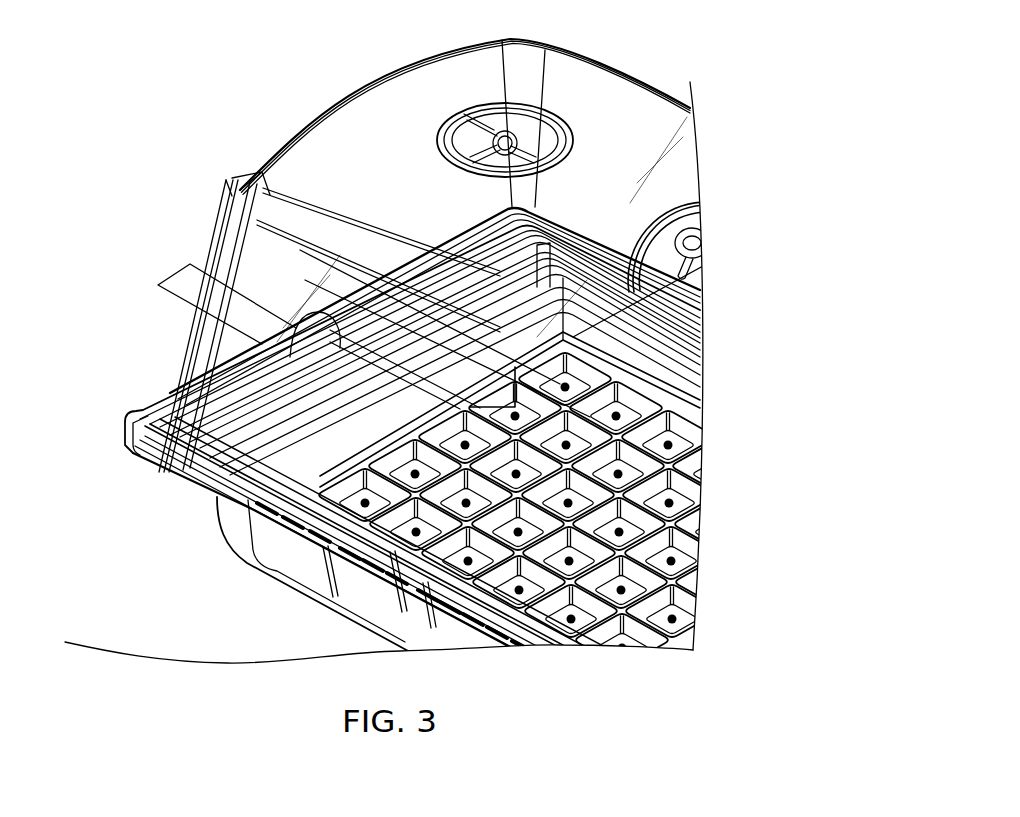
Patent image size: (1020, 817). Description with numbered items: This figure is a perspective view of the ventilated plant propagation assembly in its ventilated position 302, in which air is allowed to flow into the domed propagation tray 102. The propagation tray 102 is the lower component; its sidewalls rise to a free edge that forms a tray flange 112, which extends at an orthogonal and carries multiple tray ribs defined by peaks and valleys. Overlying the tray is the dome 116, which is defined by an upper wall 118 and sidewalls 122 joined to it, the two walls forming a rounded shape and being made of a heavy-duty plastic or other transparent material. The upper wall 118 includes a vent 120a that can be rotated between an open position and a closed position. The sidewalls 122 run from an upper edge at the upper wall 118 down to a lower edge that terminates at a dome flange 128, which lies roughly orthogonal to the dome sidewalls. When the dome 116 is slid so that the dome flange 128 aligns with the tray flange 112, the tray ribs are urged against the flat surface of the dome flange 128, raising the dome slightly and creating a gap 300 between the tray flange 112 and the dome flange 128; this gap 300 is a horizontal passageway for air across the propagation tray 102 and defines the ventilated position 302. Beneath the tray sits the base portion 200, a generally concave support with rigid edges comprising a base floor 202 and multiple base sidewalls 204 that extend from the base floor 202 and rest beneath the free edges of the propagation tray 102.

The dome 116 is at (264, 129).
The upper wall 118 is at (398, 157).
The vent 120a is at (553, 110).
The sidewalls 122 is at (316, 281).
The gap 300 is at (200, 404).
The ventilated position 302 is at (117, 413).
The dome flange 128 is at (128, 447).
The tray flange 112 is at (178, 472).
The propagation tray 102 is at (350, 484).
The base floor 202 is at (232, 553).
The base sidewalls 204 is at (320, 576).
The base portion 200 is at (283, 574).